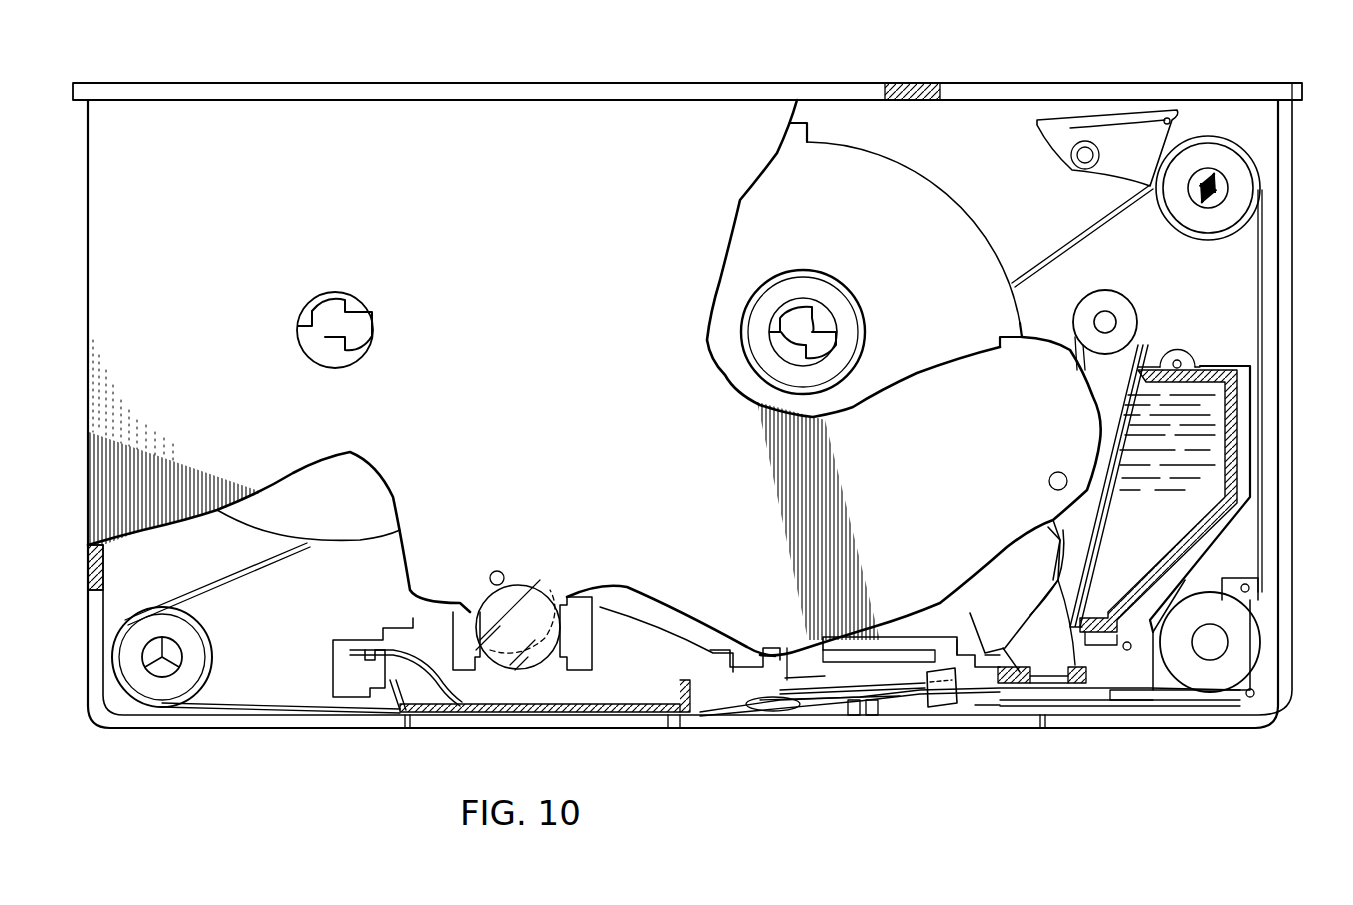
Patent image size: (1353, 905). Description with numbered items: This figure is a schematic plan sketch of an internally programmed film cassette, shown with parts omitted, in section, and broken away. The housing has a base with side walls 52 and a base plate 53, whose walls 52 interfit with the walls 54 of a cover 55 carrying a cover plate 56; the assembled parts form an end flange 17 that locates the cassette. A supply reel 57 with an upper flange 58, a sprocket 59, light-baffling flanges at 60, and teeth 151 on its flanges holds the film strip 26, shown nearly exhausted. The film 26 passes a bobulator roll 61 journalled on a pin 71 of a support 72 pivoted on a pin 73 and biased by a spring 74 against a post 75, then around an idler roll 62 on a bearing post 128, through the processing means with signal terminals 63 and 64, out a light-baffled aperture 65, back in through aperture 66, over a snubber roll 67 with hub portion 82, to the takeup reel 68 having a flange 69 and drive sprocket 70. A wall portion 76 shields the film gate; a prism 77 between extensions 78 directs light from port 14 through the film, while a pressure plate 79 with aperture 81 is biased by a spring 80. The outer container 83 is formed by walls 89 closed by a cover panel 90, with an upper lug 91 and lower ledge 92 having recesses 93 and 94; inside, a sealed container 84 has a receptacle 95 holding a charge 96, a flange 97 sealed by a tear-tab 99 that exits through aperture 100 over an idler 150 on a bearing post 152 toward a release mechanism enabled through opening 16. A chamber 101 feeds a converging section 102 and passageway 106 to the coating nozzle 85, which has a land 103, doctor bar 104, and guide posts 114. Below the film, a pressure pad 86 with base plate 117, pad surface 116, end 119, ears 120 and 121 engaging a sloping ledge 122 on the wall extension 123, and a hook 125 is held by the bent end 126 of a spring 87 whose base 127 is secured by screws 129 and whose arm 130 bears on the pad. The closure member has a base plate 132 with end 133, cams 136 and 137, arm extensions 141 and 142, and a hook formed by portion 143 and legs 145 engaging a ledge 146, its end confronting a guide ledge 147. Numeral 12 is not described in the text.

The drive hub 12 is at (315, 302).
The port 14 is at (500, 571).
The opening 16 is at (1050, 487).
The end flange 17 is at (449, 83).
The film strip 26 is at (218, 575).
The side walls 52 is at (1294, 325).
The base plate 53 is at (651, 415).
The walls 54 is at (922, 83).
The cover 55 is at (100, 138).
The cover plate 56 is at (103, 258).
The supply reel 57 is at (908, 195).
The upper flange 58 is at (955, 203).
The sprocket 59 is at (830, 315).
The annular flanges 60 is at (868, 328).
The bobulator roll 61 is at (1228, 143).
The idler roll 62 is at (1260, 657).
The terminal 63 is at (855, 706).
The terminal 64 is at (870, 706).
The aperture 65 is at (670, 720).
The aperture 66 is at (409, 720).
The snubber roll 67 is at (196, 630).
The takeup reel 68 is at (352, 550).
The upper flange 69 is at (242, 510).
The drive sprocket 70 is at (360, 336).
The pin 71 is at (1235, 196).
The support 72 is at (1110, 180).
The pin 73 is at (1100, 156).
The spring 74 is at (1088, 118).
The post 75 is at (1171, 121).
The wall portion 76 is at (418, 605).
The prism 77 is at (545, 595).
The extensions 78 is at (458, 665).
The pressure plate 79 is at (505, 706).
The spring 80 is at (447, 697).
The aperture 81 is at (540, 706).
The hub portion 82 is at (192, 657).
The outer container 83 is at (978, 600).
The sealed container 84 is at (1194, 483).
The coating nozzle 85 is at (1000, 665).
The pressure pad 86 is at (1045, 703).
The spring 87 is at (1120, 710).
The walls 89 is at (1003, 646).
The cover panel 90 is at (1038, 586).
The upper lug 91 is at (1170, 350).
The lower ledge portion 92 is at (1101, 646).
The locating recess 93 is at (1181, 358).
The locating recess 94 is at (1138, 640).
The receptacle 95 is at (1135, 610).
The charge of processing composition 96 is at (1158, 501).
The circumscribing flange 97 is at (1075, 655).
The tear-tab 99 is at (1073, 345).
The aperture 100 is at (1119, 480).
The chamber 101 is at (1068, 603).
The downwardly converging section 102 is at (1012, 667).
The film engaging land 103 is at (1068, 678).
The doctor bar 104 is at (1075, 704).
The passageway 106 is at (1030, 674).
The posts 114 is at (1133, 707).
The pad surface 116 is at (1045, 705).
The base plate 117 is at (1010, 704).
The end 119 is at (1160, 703).
The ears 120 is at (1158, 692).
The ears 121 is at (913, 702).
The sloping ledge 122 is at (930, 674).
The extension 123 is at (905, 640).
The hook element 125 is at (1000, 704).
The upwardly bent end 126 is at (985, 704).
The base portion 127 is at (1275, 615).
The bearing post 128 is at (1220, 631).
The screws 129 is at (1244, 583).
The spring arm 130 is at (1210, 708).
The base plate 132 is at (830, 690).
The end 133 is at (962, 655).
The cam 136 is at (845, 697).
The cam 137 is at (808, 703).
The spring arm extension 141 is at (742, 703).
The spring arm extension 142 is at (760, 703).
The central portion 143 is at (808, 672).
The leg extension portions 145 is at (762, 652).
The ledge portion 146 is at (787, 648).
The guide ledge 147 is at (928, 692).
The idler 150 is at (1104, 292).
The teeth 151 is at (808, 138).
The bearing post 152 is at (1113, 318).